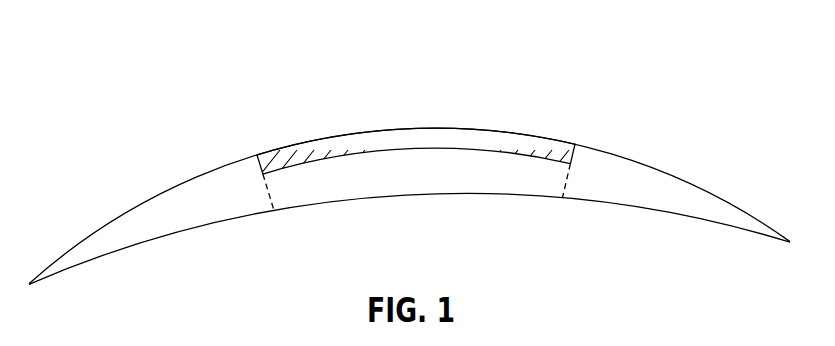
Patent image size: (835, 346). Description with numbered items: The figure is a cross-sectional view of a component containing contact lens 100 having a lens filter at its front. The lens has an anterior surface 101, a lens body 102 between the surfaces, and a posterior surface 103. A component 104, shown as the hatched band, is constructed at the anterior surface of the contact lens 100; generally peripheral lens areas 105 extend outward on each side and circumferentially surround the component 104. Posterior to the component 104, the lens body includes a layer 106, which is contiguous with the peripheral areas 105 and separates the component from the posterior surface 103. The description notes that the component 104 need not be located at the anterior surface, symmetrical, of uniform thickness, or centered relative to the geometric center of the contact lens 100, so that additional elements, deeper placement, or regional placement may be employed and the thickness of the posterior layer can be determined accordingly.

The component containing contact lens 100 is at (132, 52).
The anterior surface 101 is at (628, 152).
The lens body 102 is at (685, 195).
The posterior surface 103 is at (640, 212).
The component 104 is at (447, 137).
The peripheral lens areas 105 is at (180, 202).
The layer 106 is at (467, 182).